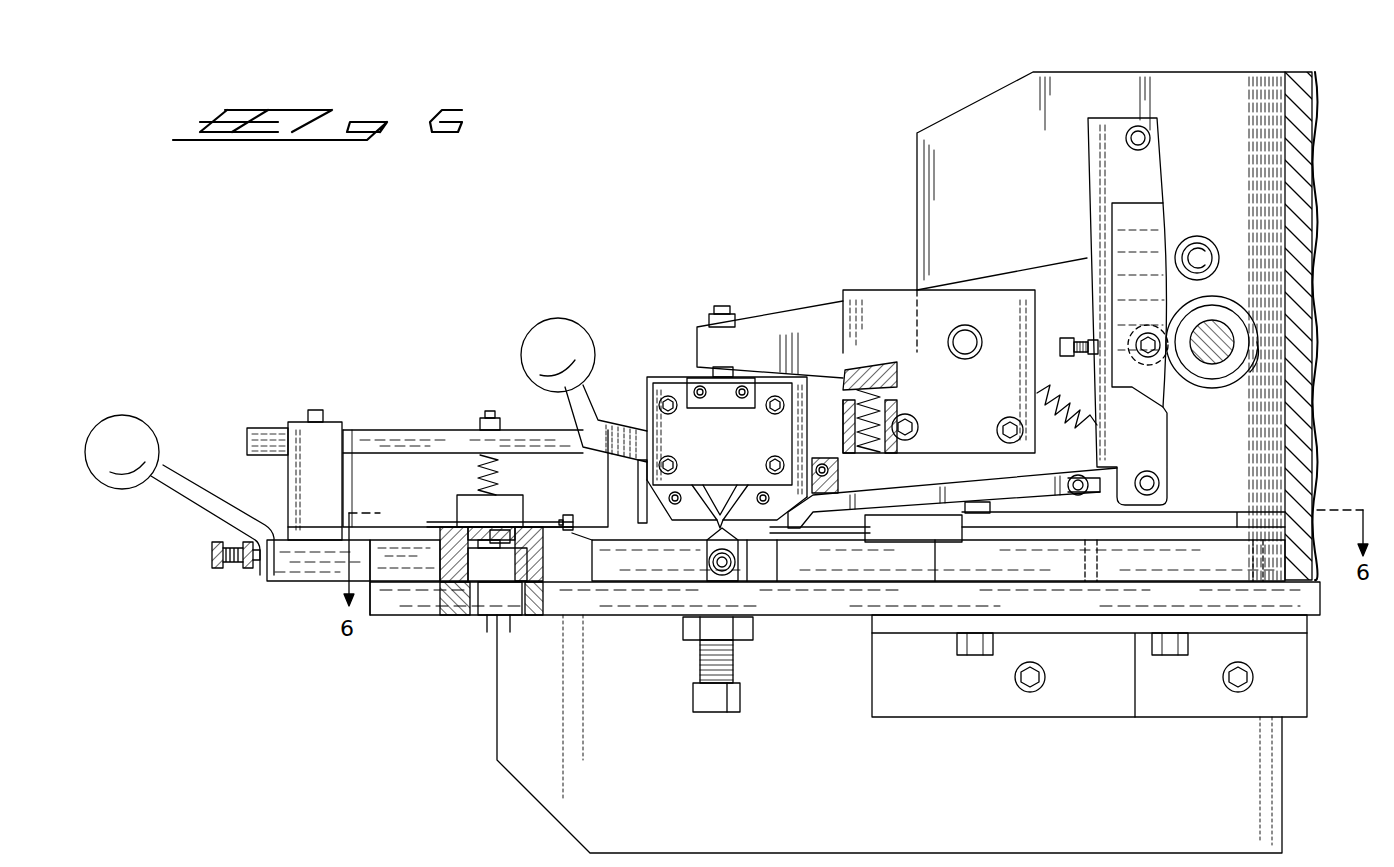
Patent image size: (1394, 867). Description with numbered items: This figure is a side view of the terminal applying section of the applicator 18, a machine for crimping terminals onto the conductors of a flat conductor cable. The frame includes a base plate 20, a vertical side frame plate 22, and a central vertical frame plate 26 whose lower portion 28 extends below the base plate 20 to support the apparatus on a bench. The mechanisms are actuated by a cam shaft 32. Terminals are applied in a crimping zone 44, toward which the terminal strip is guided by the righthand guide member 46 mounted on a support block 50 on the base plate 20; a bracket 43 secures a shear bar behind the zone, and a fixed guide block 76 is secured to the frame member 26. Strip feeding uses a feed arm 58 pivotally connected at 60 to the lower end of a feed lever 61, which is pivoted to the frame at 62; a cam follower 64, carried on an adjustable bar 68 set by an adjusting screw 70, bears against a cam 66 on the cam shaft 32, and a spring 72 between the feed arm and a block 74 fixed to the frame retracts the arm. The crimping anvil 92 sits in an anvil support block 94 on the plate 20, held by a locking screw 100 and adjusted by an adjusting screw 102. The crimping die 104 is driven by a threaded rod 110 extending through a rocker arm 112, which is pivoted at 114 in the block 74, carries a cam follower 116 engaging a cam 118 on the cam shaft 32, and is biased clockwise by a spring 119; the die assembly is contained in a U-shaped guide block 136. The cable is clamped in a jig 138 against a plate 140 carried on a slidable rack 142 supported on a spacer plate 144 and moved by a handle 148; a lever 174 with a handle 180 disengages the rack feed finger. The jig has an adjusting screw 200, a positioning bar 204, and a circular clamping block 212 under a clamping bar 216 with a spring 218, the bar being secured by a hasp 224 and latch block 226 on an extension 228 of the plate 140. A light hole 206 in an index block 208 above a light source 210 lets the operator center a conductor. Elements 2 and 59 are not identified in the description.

The plate 2 is at (440, 520).
The applicator 18 is at (713, 136).
The base plate 20 is at (845, 598).
The vertical side frame plate 22 is at (1300, 140).
The central vertical frame plate 26 is at (970, 115).
The frame plate extension 28 is at (535, 768).
The cam shaft 32 is at (1225, 345).
The bracket 43 is at (830, 462).
The crimping zone 44 is at (656, 366).
The righthand strip guide member 46 is at (1225, 525).
The support block 50 is at (938, 554).
The feed arm 58 is at (912, 494).
The pivot pin 59 is at (1080, 496).
The pivotal connection 60 is at (1155, 480).
The feed lever 61 is at (1160, 428).
The pivot 62 is at (1150, 140).
The cam follower 64 is at (1175, 355).
The cam 66 is at (1228, 368).
The bar 68 is at (1155, 212).
The adjusting screw 70 is at (1068, 352).
The spring 72 is at (1070, 427).
The block 74 is at (939, 371).
The fixed guide block 76 is at (686, 507).
The crimping anvil 92 is at (735, 568).
The anvil support block 94 is at (795, 580).
The locking screw 100 is at (712, 562).
The adjusting screw 102 is at (736, 670).
The crimping die 104 is at (702, 390).
The threaded rod 110 is at (724, 312).
The rocker arm 112 is at (767, 335).
The pivot 114 is at (968, 330).
The cam follower 116 is at (1210, 246).
The cam 118 is at (1242, 300).
The spring 119 is at (875, 385).
The U-shaped guide block 136 is at (722, 450).
The jig 138 is at (352, 418).
The cable supporting plate 140 is at (388, 535).
The slidable rack 142 is at (288, 568).
The spacer plate 144 is at (390, 582).
The handle 148 is at (142, 432).
The lever 174 is at (608, 433).
The handle 180 is at (557, 328).
The adjusting screw 200 is at (226, 562).
The positioning bar 204 is at (568, 522).
The light hole 206 is at (504, 527).
The index block 208 is at (434, 570).
The light source 210 is at (486, 572).
The circular clamping block 212 is at (462, 502).
The clamping bar 216 is at (408, 440).
The spring 218 is at (480, 462).
The hasp 224 is at (312, 408).
The latch block 226 is at (298, 430).
The extension 228 is at (302, 538).